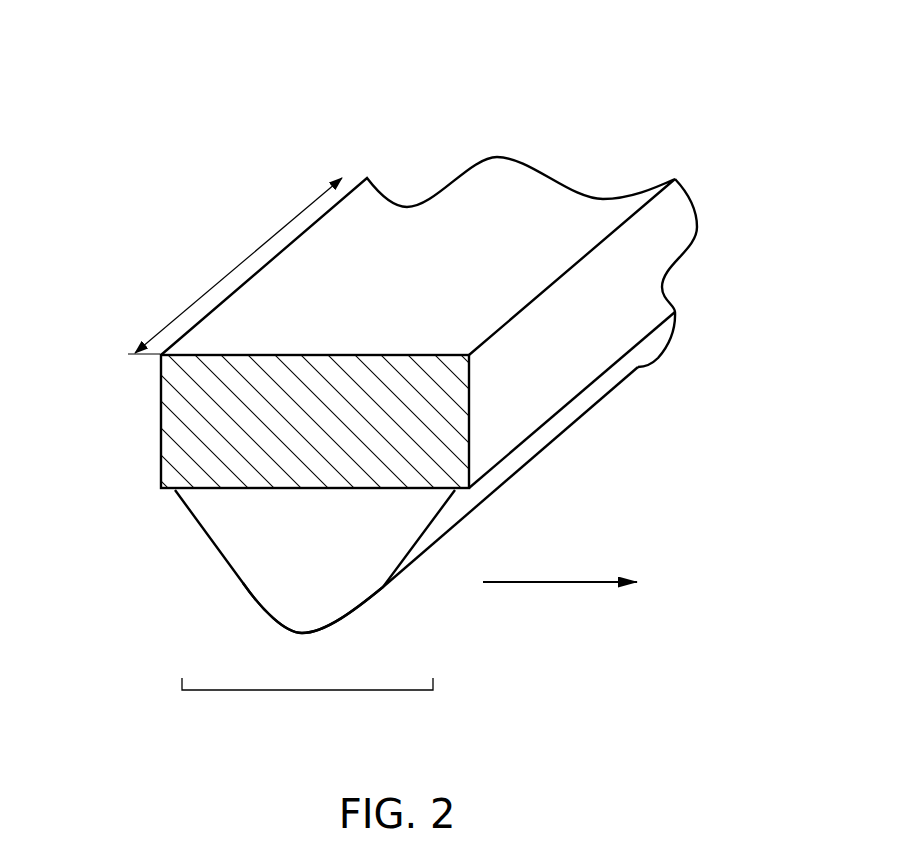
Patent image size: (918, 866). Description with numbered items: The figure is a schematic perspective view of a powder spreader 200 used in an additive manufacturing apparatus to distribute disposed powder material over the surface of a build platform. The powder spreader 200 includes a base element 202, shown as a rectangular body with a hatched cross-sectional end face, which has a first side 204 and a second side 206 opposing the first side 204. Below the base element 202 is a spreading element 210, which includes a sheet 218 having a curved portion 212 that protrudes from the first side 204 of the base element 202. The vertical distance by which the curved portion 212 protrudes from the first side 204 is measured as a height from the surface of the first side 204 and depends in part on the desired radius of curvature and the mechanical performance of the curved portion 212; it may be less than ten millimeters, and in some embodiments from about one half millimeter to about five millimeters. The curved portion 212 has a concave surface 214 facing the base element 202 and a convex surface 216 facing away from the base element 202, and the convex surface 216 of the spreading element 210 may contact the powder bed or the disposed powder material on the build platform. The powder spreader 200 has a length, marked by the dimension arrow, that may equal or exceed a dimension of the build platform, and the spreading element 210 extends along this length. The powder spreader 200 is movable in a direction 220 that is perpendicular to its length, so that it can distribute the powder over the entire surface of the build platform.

The powder spreader 200 is at (682, 83).
The base element 202 is at (157, 420).
The first side 204 is at (555, 413).
The second side 206 is at (528, 182).
The spreading element 210 is at (216, 554).
The curved portion 212 is at (307, 690).
The concave surface 214 is at (331, 628).
The convex surface 216 is at (246, 589).
The sheet 218 is at (460, 506).
The direction 220 is at (560, 582).